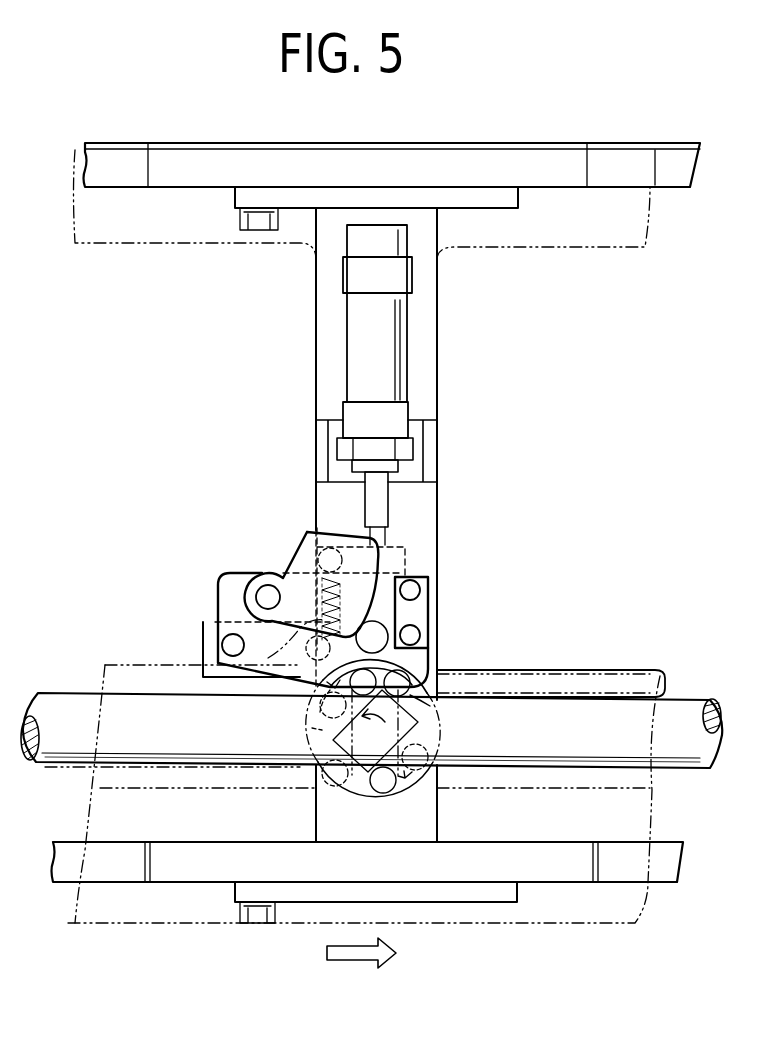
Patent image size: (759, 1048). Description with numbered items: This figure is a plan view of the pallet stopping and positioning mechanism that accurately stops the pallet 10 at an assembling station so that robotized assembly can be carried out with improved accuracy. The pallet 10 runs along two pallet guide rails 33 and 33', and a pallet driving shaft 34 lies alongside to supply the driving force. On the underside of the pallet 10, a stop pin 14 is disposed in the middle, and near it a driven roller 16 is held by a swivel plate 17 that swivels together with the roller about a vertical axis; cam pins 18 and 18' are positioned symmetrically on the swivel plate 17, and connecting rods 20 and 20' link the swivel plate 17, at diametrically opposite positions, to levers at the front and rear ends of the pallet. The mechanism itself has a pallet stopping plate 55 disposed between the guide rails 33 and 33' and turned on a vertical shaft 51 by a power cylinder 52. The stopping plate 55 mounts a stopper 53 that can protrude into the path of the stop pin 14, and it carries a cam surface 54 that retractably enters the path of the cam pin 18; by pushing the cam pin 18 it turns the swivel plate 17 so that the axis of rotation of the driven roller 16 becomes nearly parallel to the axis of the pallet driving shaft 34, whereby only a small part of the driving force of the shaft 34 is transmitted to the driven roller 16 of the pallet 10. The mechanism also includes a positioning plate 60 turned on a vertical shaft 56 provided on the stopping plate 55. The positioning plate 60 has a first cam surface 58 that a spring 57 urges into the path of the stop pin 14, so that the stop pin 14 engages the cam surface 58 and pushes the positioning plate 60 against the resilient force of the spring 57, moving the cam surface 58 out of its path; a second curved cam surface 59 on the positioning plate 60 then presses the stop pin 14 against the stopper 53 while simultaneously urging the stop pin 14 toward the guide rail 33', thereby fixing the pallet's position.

The pallet 10 is at (578, 245).
The stop pin 14 is at (385, 636).
The driven roller 16 is at (430, 742).
The swivel plate 17 is at (312, 728).
The cam pin 18 is at (287, 708).
The cam pin 18' is at (446, 774).
The connecting rod 20 is at (347, 801).
The connecting rod 20' is at (385, 658).
The guide rail 33 is at (392, 145).
The guide rail 33' is at (392, 848).
The pallet driving shaft 34 is at (678, 707).
The vertical shaft 51 is at (218, 645).
The power cylinder 52 is at (348, 357).
The stopper 53 is at (430, 592).
The cam surface 54 is at (430, 706).
The pallet stopping plate 55 is at (443, 668).
The vertical shaft 56 is at (262, 590).
The spring 57 is at (313, 585).
The first cam surface 58 is at (300, 628).
The second curved cam surface 59 is at (390, 580).
The positioning plate 60 is at (315, 530).